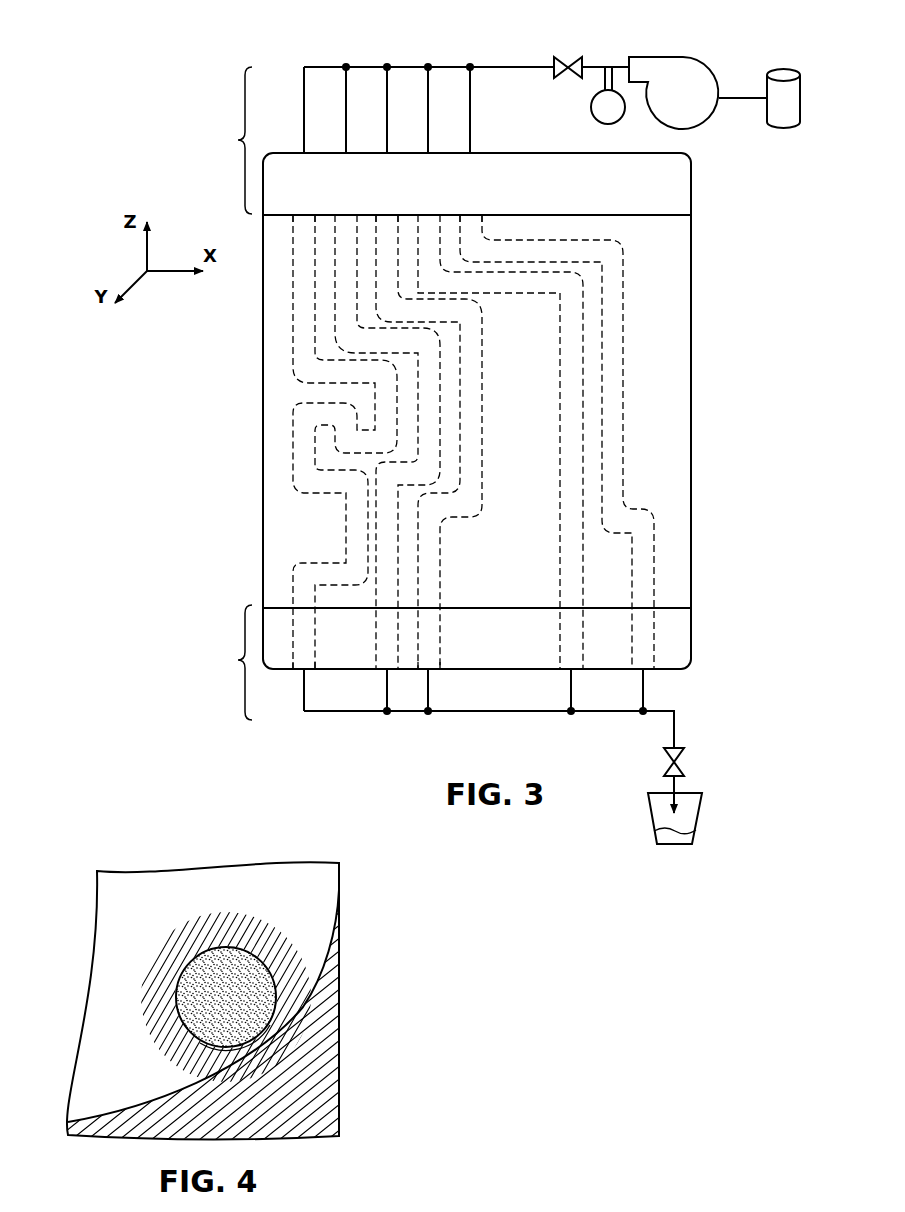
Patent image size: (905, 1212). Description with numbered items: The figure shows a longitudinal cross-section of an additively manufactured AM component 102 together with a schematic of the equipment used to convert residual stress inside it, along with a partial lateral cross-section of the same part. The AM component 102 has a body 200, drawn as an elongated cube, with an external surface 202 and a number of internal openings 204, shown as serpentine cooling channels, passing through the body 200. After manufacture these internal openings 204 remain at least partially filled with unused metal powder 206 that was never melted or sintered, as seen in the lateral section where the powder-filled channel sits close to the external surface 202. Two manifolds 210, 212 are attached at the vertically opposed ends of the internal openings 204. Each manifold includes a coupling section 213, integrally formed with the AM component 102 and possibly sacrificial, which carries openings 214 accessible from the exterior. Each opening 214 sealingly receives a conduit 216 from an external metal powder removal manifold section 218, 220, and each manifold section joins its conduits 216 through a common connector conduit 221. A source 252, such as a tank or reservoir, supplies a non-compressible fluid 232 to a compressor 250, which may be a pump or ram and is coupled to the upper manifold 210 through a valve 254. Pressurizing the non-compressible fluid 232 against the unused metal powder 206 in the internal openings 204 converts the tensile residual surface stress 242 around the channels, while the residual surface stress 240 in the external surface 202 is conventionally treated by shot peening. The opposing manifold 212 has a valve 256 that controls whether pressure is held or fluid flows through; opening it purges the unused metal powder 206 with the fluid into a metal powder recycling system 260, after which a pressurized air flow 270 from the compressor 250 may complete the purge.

In FIG. 3, the AM component 102 is at (658, 148).
In FIG. 3, the body 200 is at (258, 498).
In FIG. 4, the body 200 is at (355, 895).
In FIG. 3, the external surface 202 is at (694, 262).
In FIG. 4, the external surface 202 is at (340, 950).
In FIG. 3, the internal opening 204 is at (293, 303).
In FIG. 4, the internal opening 204 is at (262, 1030).
In FIG. 4, the unused metal powder 206 is at (260, 1010).
In FIG. 3, the manifold 210 is at (222, 140).
In FIG. 3, the manifold 212 is at (220, 662).
In FIG. 3, the coupling section 213 is at (670, 195).
In FIG. 3, the opening 214 is at (347, 163).
In FIG. 3, the conduit 216 is at (304, 116).
In FIG. 3, the metal powder removal manifold section 218 is at (314, 62).
In FIG. 3, the metal powder removal manifold section 220 is at (343, 718).
In FIG. 3, the common connector conduit 221 is at (470, 66).
In FIG. 3, the non-compressible fluid 232 is at (646, 72).
In FIG. 3, the pressurized air flow 270 is at (623, 65).
In FIG. 4, the residual surface stress 240 is at (248, 1118).
In FIG. 4, the residual surface stress 242 is at (235, 935).
In FIG. 3, the compressor 250 is at (718, 80).
In FIG. 3, the source 252 is at (780, 93).
In FIG. 3, the valve 254 is at (573, 57).
In FIG. 3, the valve 256 is at (682, 755).
In FIG. 3, the metal powder recycling system 260 is at (686, 810).